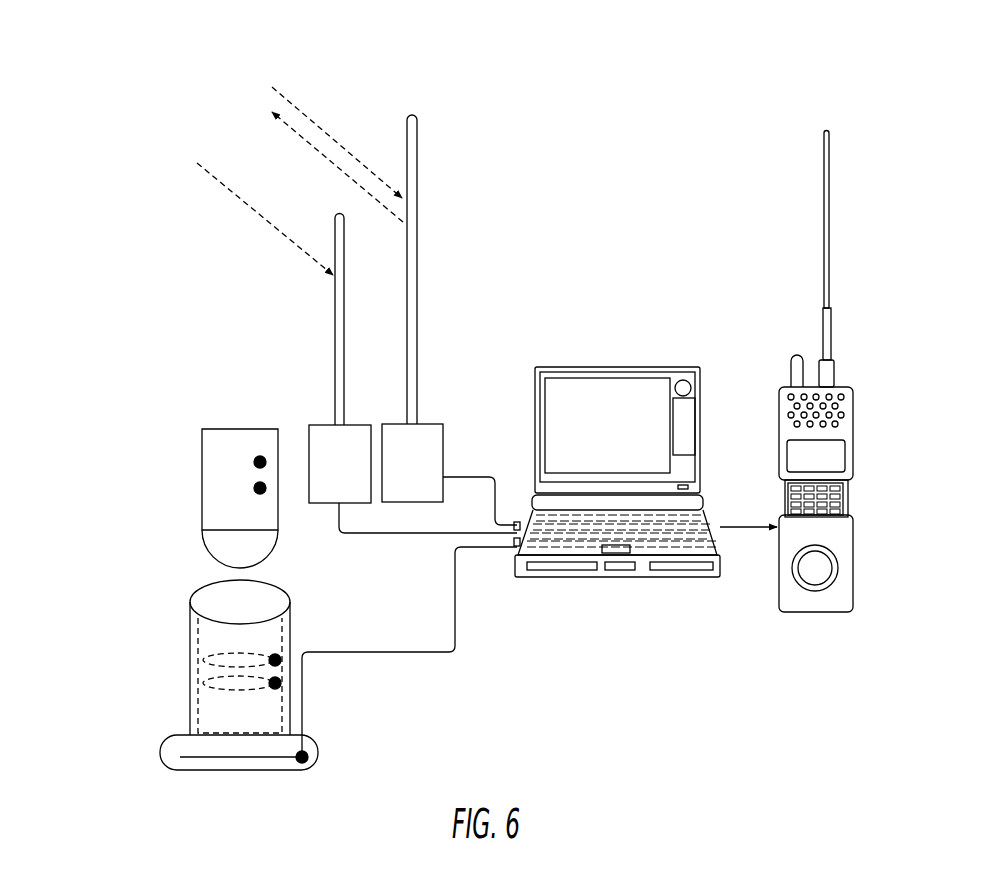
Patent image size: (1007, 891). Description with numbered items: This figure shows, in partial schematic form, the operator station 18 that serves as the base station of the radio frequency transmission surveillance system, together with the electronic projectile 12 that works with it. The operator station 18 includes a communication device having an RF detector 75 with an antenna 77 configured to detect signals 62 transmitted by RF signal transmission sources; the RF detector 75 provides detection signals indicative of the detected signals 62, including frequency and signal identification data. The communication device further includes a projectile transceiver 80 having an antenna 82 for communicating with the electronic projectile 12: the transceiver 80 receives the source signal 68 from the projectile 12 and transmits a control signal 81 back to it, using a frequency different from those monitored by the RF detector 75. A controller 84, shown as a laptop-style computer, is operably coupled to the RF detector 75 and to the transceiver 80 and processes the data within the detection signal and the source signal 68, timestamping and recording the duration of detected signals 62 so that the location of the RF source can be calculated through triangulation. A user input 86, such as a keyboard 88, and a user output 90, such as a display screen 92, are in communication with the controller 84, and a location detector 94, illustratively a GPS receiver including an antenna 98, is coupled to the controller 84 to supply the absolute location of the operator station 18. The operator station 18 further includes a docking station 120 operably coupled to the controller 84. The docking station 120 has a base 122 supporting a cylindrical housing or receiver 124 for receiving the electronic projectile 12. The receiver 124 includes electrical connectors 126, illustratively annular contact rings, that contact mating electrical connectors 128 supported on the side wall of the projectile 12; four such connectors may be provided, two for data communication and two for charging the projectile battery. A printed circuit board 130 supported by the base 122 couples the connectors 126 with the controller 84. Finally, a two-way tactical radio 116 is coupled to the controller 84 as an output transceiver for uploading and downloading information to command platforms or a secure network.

The electronic projectile 12 is at (155, 482).
The operator station 18 is at (182, 232).
The signals 62 is at (275, 230).
The source signal 68 is at (360, 162).
The RF detector 75 is at (319, 359).
The antenna 77 is at (333, 372).
The projectile transceiver 80 is at (448, 308).
The control signal 81 is at (342, 172).
The antenna 82 is at (418, 307).
The controller 84 is at (634, 461).
The user input 86 is at (636, 578).
The keyboard 88 is at (548, 553).
The user output 90 is at (675, 372).
The display screen 92 is at (568, 388).
The location detector 94 is at (645, 385).
The antenna 98 is at (700, 438).
The two-way tactical radio 116 is at (792, 618).
The docking station 120 is at (148, 760).
The base 122 is at (197, 760).
The cylindrical housing or receiver 124 is at (290, 615).
The electrical connectors 126 is at (203, 660).
The electrical contacts or connectors 128 is at (253, 488).
The printed circuit board 130 is at (252, 758).